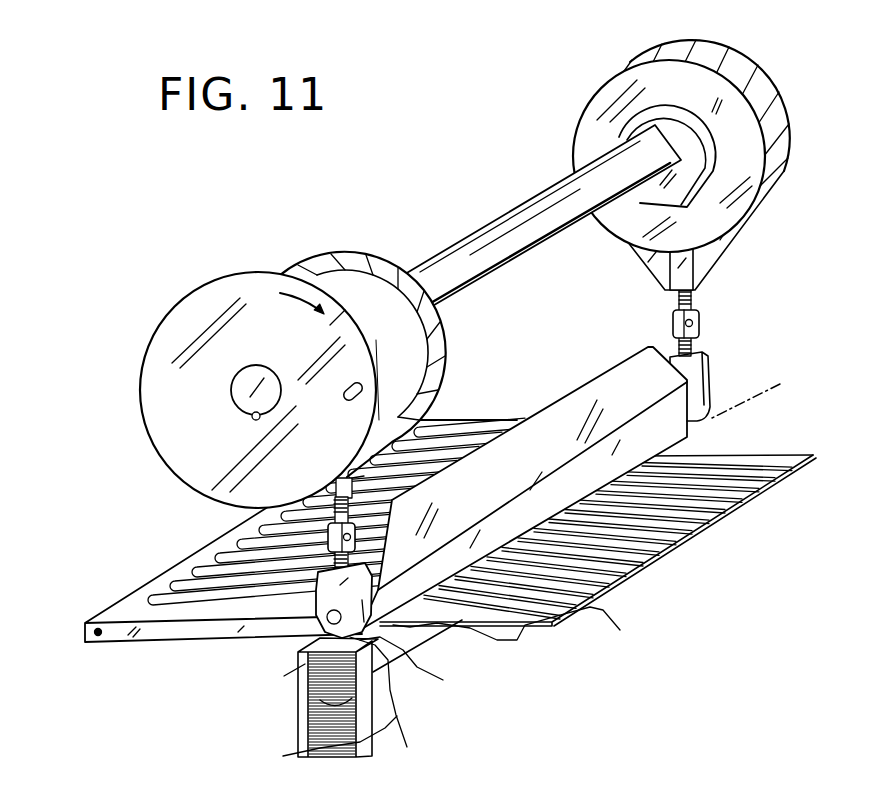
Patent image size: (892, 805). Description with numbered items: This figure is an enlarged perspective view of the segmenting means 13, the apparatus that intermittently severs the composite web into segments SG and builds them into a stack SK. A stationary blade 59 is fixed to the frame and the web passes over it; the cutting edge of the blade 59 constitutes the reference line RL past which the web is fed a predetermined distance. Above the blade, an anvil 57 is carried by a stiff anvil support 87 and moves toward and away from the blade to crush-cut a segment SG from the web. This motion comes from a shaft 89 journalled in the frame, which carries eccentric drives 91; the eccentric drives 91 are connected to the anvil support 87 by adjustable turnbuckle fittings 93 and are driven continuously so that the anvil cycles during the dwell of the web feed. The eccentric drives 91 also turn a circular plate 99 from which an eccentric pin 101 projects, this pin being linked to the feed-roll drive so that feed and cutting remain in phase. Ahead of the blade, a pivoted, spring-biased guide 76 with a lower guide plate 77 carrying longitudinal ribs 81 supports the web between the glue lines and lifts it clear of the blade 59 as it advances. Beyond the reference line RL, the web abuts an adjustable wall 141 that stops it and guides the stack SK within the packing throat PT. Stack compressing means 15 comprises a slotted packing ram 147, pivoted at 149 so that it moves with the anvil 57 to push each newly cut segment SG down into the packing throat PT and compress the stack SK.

The segmenting means 13 is at (463, 184).
The stack compressing means 15 is at (442, 516).
The anvil 57 is at (557, 490).
The blade 59 is at (332, 697).
The guide 76 is at (773, 451).
The lower guide plate 77 is at (616, 529).
The longitudinal ribs 81 is at (648, 563).
The anvil support 87 is at (607, 410).
The shaft 89 is at (540, 195).
The eccentric drives 91 is at (775, 92).
The adjustable turnbuckle fittings 93 is at (700, 310).
The circular plate 99 is at (293, 358).
The eccentric pin 101 is at (348, 398).
The adjustable wall 141 is at (322, 700).
The packing ram 147 is at (279, 558).
The pivot 149 is at (97, 637).
The reference line RL is at (531, 531).
The packing throat PT is at (306, 733).
The segment SG is at (365, 642).
The stack SK is at (398, 718).